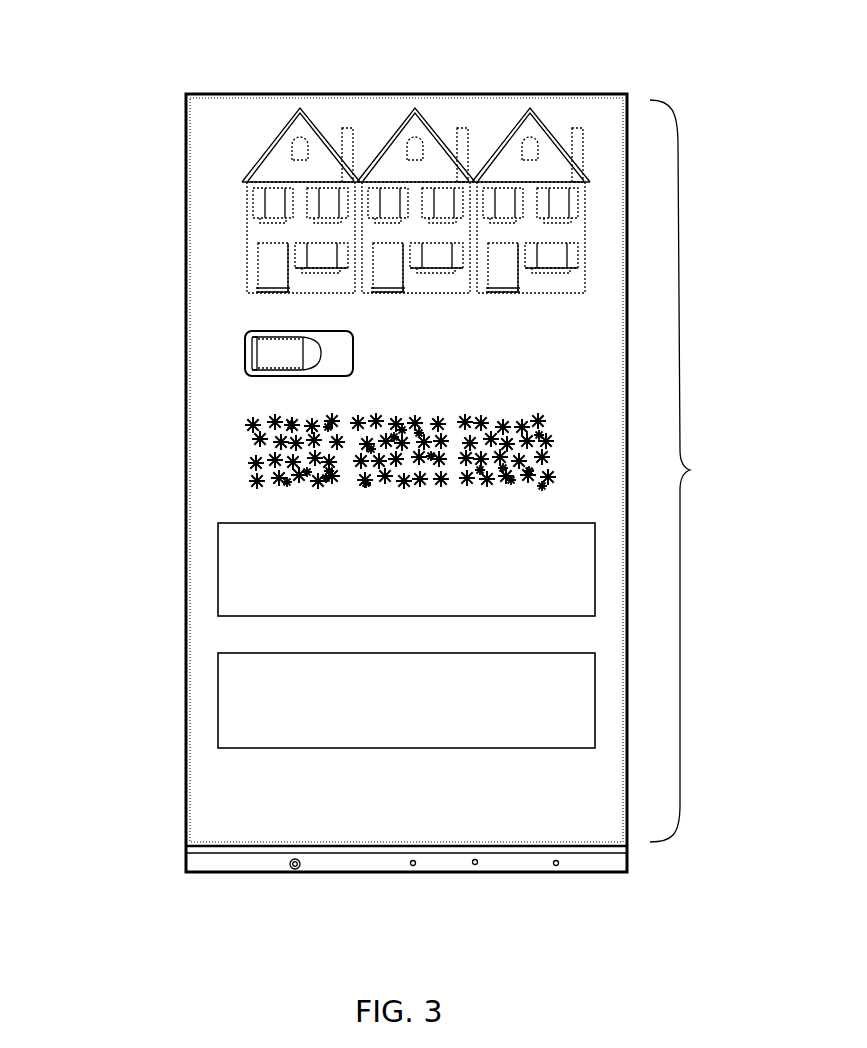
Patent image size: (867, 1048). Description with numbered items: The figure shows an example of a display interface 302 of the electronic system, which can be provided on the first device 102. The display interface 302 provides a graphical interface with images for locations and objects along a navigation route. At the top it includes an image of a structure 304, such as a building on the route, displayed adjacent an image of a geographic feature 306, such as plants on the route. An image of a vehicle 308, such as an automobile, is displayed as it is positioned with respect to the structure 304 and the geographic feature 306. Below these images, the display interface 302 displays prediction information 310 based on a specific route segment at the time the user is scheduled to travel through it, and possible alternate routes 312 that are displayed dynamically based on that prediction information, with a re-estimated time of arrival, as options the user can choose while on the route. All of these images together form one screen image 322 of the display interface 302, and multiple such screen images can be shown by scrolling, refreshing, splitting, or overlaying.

The first device 102 is at (192, 57).
The display interface 302 is at (582, 816).
The structure 304 is at (532, 108).
The geographic feature 306 is at (245, 440).
The vehicle 308 is at (245, 355).
The prediction information 310 is at (582, 600).
The alternate routes 312 is at (582, 731).
The screen image 322 is at (698, 471).